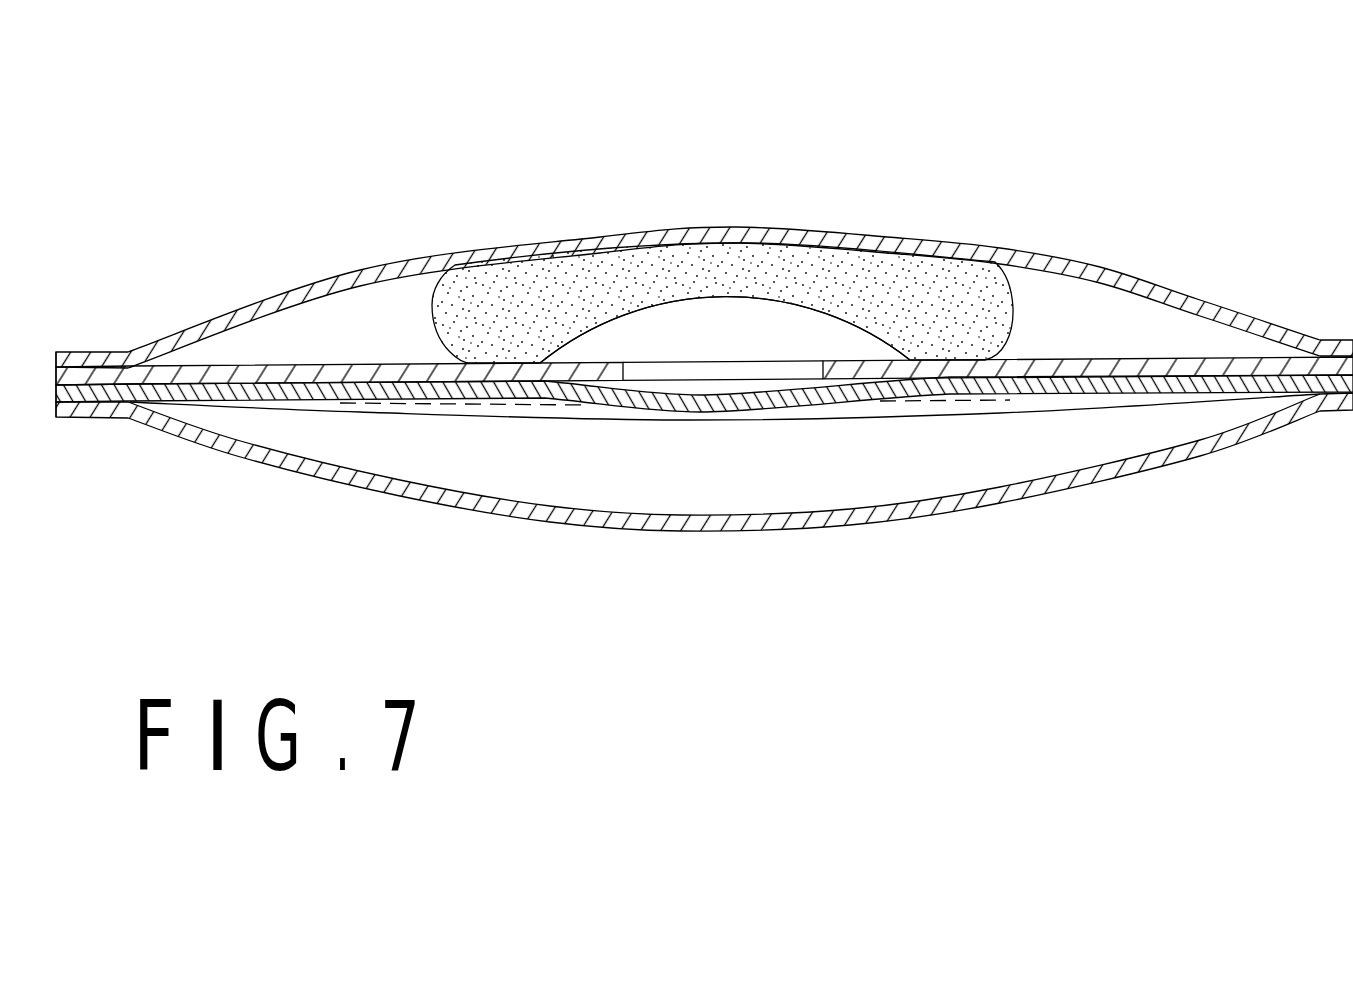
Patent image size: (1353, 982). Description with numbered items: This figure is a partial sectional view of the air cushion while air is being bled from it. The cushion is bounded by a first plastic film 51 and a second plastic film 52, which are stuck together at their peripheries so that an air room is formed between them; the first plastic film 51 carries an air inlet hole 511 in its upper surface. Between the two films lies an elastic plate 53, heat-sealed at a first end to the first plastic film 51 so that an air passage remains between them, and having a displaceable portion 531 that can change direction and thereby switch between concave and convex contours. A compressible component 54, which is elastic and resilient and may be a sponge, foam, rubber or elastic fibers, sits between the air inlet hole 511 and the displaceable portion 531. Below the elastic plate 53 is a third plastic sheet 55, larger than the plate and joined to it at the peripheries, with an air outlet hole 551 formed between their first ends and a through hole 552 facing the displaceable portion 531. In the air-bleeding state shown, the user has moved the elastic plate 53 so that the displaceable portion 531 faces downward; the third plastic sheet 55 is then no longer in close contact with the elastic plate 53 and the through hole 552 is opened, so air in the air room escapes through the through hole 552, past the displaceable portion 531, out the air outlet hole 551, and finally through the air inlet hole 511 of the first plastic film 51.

The first plastic film 51 is at (313, 291).
The air inlet hole 511 is at (727, 226).
The second plastic film 52 is at (373, 488).
The elastic plate 53 is at (1150, 363).
The displaceable portion 531 is at (725, 300).
The compressible component 54 is at (533, 280).
The third plastic sheet 55 is at (1102, 402).
The air outlet hole 551 is at (777, 413).
The through hole 552 is at (722, 413).